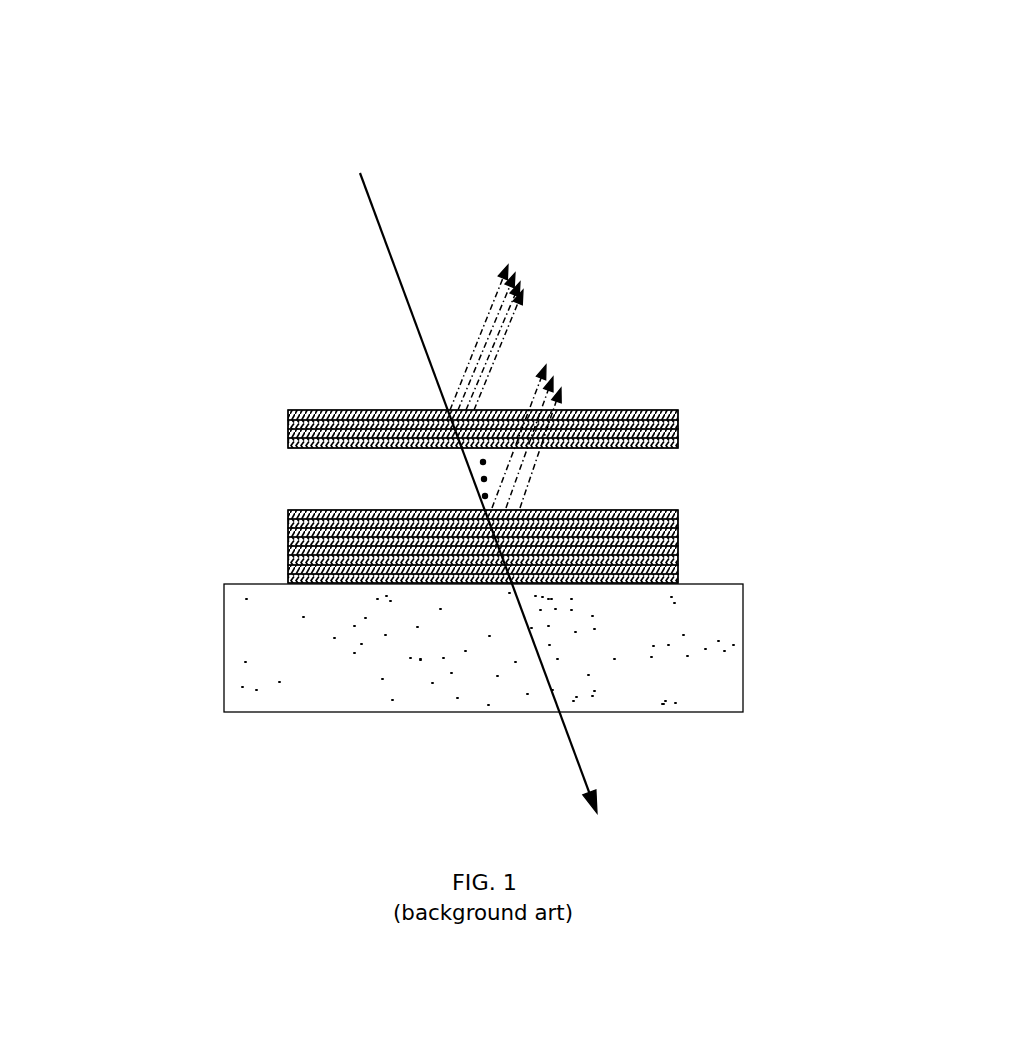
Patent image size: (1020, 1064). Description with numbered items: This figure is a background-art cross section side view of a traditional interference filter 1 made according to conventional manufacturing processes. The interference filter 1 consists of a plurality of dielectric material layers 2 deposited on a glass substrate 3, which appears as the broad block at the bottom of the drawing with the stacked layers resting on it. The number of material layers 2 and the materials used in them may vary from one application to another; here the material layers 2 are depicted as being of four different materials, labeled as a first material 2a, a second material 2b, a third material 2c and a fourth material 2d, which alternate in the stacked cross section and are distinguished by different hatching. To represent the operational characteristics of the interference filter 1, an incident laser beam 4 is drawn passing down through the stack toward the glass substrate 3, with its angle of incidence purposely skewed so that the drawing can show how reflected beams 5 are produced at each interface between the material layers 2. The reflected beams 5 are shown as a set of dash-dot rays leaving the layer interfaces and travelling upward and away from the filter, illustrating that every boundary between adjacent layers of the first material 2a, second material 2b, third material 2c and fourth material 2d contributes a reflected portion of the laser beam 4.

The interference filter 1 is at (479, 361).
The dielectric material layers 2 is at (479, 475).
The first material 2a is at (598, 394).
The second material 2b is at (363, 398).
The third material 2c is at (599, 421).
The fourth material 2d is at (366, 426).
The glass substrate 3 is at (558, 603).
The laser beam 4 is at (365, 493).
The reflected beams 5 is at (672, 345).